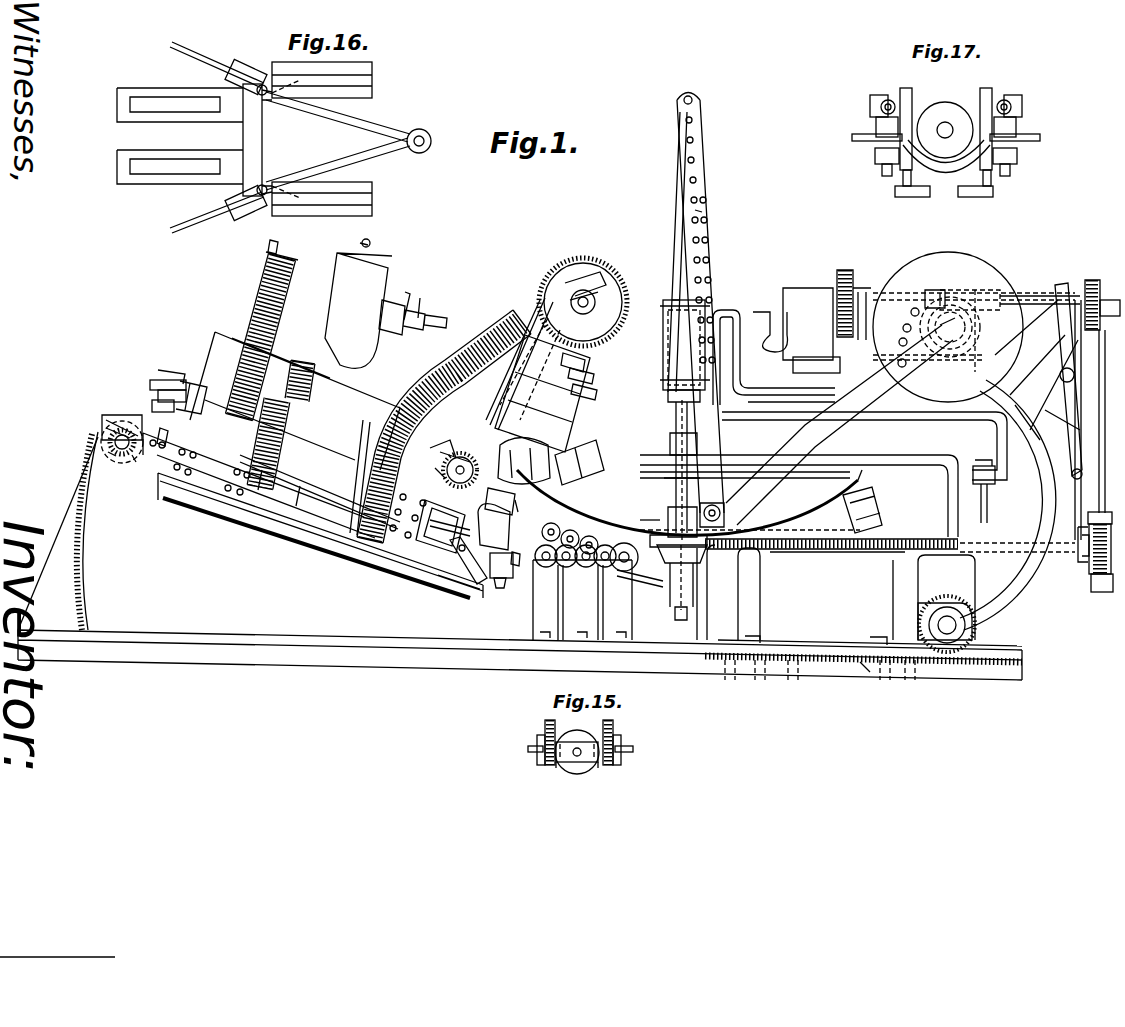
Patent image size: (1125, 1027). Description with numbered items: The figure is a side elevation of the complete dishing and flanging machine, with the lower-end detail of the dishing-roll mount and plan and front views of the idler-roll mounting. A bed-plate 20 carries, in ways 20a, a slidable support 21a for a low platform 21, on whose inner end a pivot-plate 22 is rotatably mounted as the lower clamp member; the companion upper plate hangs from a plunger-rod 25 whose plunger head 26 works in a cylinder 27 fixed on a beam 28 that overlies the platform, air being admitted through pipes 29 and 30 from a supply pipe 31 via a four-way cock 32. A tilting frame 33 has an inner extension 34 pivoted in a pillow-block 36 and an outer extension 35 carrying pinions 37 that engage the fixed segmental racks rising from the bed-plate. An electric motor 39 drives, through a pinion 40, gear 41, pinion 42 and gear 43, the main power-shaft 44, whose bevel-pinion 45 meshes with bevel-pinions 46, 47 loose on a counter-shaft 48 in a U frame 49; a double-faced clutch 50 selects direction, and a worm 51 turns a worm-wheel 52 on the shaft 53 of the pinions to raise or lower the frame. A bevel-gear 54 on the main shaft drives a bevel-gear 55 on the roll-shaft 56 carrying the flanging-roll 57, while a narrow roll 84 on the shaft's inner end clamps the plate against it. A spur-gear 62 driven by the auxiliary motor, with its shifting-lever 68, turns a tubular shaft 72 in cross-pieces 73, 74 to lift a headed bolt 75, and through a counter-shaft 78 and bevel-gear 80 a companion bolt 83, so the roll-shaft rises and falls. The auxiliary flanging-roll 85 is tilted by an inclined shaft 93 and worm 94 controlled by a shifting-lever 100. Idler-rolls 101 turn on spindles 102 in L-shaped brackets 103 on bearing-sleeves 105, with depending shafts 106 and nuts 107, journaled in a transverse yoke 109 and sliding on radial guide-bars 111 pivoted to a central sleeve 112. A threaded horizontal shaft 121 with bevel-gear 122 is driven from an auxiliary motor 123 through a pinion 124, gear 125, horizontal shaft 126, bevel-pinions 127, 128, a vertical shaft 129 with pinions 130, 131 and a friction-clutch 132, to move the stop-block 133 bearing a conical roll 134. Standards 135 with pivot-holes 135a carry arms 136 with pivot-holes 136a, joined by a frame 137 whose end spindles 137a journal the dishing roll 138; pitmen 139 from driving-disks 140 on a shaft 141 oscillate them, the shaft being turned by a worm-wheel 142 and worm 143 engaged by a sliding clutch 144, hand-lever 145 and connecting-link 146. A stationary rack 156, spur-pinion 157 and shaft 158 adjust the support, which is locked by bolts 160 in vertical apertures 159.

In FIG. 1, the bed-plate 20 is at (505, 664).
In FIG. 1, the ways 20a is at (822, 648).
In FIG. 1, the low platform 21 is at (770, 536).
In FIG. 1, the slidable support 21a is at (768, 588).
In FIG. 1, the pivot-plate 22 is at (652, 532).
In FIG. 1, the plunger-rod 25 is at (672, 480).
In FIG. 1, the plunger head 26 is at (668, 354).
In FIG. 1, the cylinder 27 is at (663, 326).
In FIG. 1, the beam 28 is at (856, 455).
In FIG. 1, the pipe 29 is at (738, 312).
In FIG. 1, the pipe 30 is at (930, 421).
In FIG. 1, the supply pipe 31 is at (988, 514).
In FIG. 1, the four-way cock 32 is at (995, 480).
In FIG. 1, the frame 33 is at (290, 530).
In FIG. 16, the longitudinal extension 34 is at (362, 88).
In FIG. 1, the longitudinal extension 34 is at (600, 528).
In FIG. 1, the longitudinal extension 35 is at (136, 462).
In FIG. 16, the pillow-block 36 is at (350, 75).
In FIG. 1, the pillow-block 36 is at (530, 600).
In FIG. 1, the pinions 37 is at (120, 462).
In FIG. 1, the electric motor 39 is at (358, 303).
In FIG. 1, the pinion 40 is at (270, 256).
In FIG. 1, the gear 41 is at (252, 318).
In FIG. 1, the pinion 42 is at (318, 378).
In FIG. 1, the gear 43 is at (292, 424).
In FIG. 17, the main power-shaft 44 is at (950, 122).
In FIG. 1, the main power-shaft 44 is at (322, 500).
In FIG. 1, the bevel-pinion 45 is at (184, 372).
In FIG. 1, the bevel-pinion 46 is at (162, 380).
In FIG. 1, the bevel-pinion 47 is at (152, 402).
In FIG. 1, the counter-shaft 48 is at (167, 434).
In FIG. 1, the U frame 49 is at (206, 390).
In FIG. 1, the double-faced clutch 50 is at (158, 386).
In FIG. 1, the worm 51 is at (178, 446).
In FIG. 1, the worm-wheel 52 is at (108, 426).
In FIG. 1, the shaft 53 is at (104, 440).
In FIG. 1, the bevel-gear 54 is at (108, 452).
In FIG. 1, the bevel-gear 55 is at (480, 340).
In FIG. 1, the roll-shaft 56 is at (440, 348).
In FIG. 1, the flanging-roll 57 is at (564, 452).
In FIG. 1, the spur-gear 62 is at (583, 260).
In FIG. 1, the shifting-lever 68 is at (540, 320).
In FIG. 1, the tubular shaft 72 is at (644, 510).
In FIG. 1, the cross-piece 73 is at (790, 540).
In FIG. 1, the cross-piece 74 is at (668, 512).
In FIG. 1, the headed bolt 75 is at (670, 481).
In FIG. 1, the counter-shaft 78 is at (586, 358).
In FIG. 1, the bevel-gear 80 is at (594, 376).
In FIG. 1, the bolt 83 is at (596, 392).
In FIG. 17, the narrow roll 84 is at (936, 106).
In FIG. 1, the narrow roll 84 is at (566, 526).
In FIG. 1, the auxiliary flanging-roll 85 is at (508, 458).
In FIG. 1, the inclined shaft 93 is at (468, 430).
In FIG. 1, the worm 94 is at (452, 448).
In FIG. 1, the shifting-lever 100 is at (548, 372).
In FIG. 16, the idler-rolls 101 is at (268, 72).
In FIG. 17, the idler-rolls 101 is at (884, 100).
In FIG. 1, the idler-rolls 101 is at (545, 492).
In FIG. 1, the spindle 102 is at (488, 504).
In FIG. 1, the L-shaped bracket 103 is at (462, 551).
In FIG. 1, the bearing-sleeve 105 is at (470, 585).
In FIG. 17, the shaft 106 is at (885, 178).
In FIG. 1, the shaft 106 is at (498, 590).
In FIG. 17, the nut 107 is at (876, 160).
In FIG. 1, the nut 107 is at (512, 568).
In FIG. 16, the transverse yoke 109 is at (258, 126).
In FIG. 17, the transverse yoke 109 is at (950, 180).
In FIG. 16, the radial guide-bars 111 is at (345, 120).
In FIG. 17, the radial guide-bars 111 is at (853, 140).
In FIG. 1, the radial guide-bars 111 is at (443, 526).
In FIG. 16, the sleeve 112 is at (414, 130).
In FIG. 1, the sleeve 112 is at (668, 590).
In FIG. 1, the horizontal shaft 121 is at (995, 548).
In FIG. 1, the bevel-gear 122 is at (1084, 556).
In FIG. 1, the auxiliary motor 123 is at (806, 290).
In FIG. 1, the pinion 124 is at (842, 362).
In FIG. 1, the gear 125 is at (846, 270).
In FIG. 1, the horizontal shaft 126 is at (882, 296).
In FIG. 1, the bevel-pinion 127 is at (1100, 295).
In FIG. 1, the bevel-pinion 128 is at (1112, 301).
In FIG. 1, the vertical shaft 129 is at (1104, 390).
In FIG. 1, the pinion 130 is at (1088, 518).
In FIG. 1, the pinion 131 is at (1098, 588).
In FIG. 1, the friction-clutch 132 is at (1078, 550).
In FIG. 1, the stop-block 133 is at (850, 538).
In FIG. 1, the conical roll 134 is at (860, 494).
In FIG. 1, the standards 135 is at (676, 225).
In FIG. 1, the pivot-holes 135a is at (682, 296).
In FIG. 15, the arms 136 is at (545, 726).
In FIG. 1, the arms 136 is at (700, 200).
In FIG. 1, the pivot-holes 136a is at (706, 228).
In FIG. 15, the frame 137 is at (556, 765).
In FIG. 15, the end spindles 137a is at (528, 750).
In FIG. 1, the end spindles 137a is at (722, 512).
In FIG. 15, the roll 138 is at (590, 768).
In FIG. 1, the roll 138 is at (92, 550).
In FIG. 15, the pitmen 139 is at (537, 740).
In FIG. 1, the pitmen 139 is at (808, 420).
In FIG. 1, the driving-disks 140 is at (914, 314).
In FIG. 1, the shaft 141 is at (960, 320).
In FIG. 1, the worm-wheel 142 is at (1010, 318).
In FIG. 1, the worm 143 is at (950, 290).
In FIG. 1, the sliding clutch 144 is at (930, 290).
In FIG. 1, the hand-lever 145 is at (1078, 410).
In FIG. 1, the connecting-link 146 is at (971, 327).
In FIG. 1, the stationary rack 156 is at (880, 664).
In FIG. 1, the spur-pinion 157 is at (948, 598).
In FIG. 1, the shaft 158 is at (976, 630).
In FIG. 1, the vertical apertures 159 is at (775, 690).
In FIG. 1, the bolts 160 is at (772, 634).